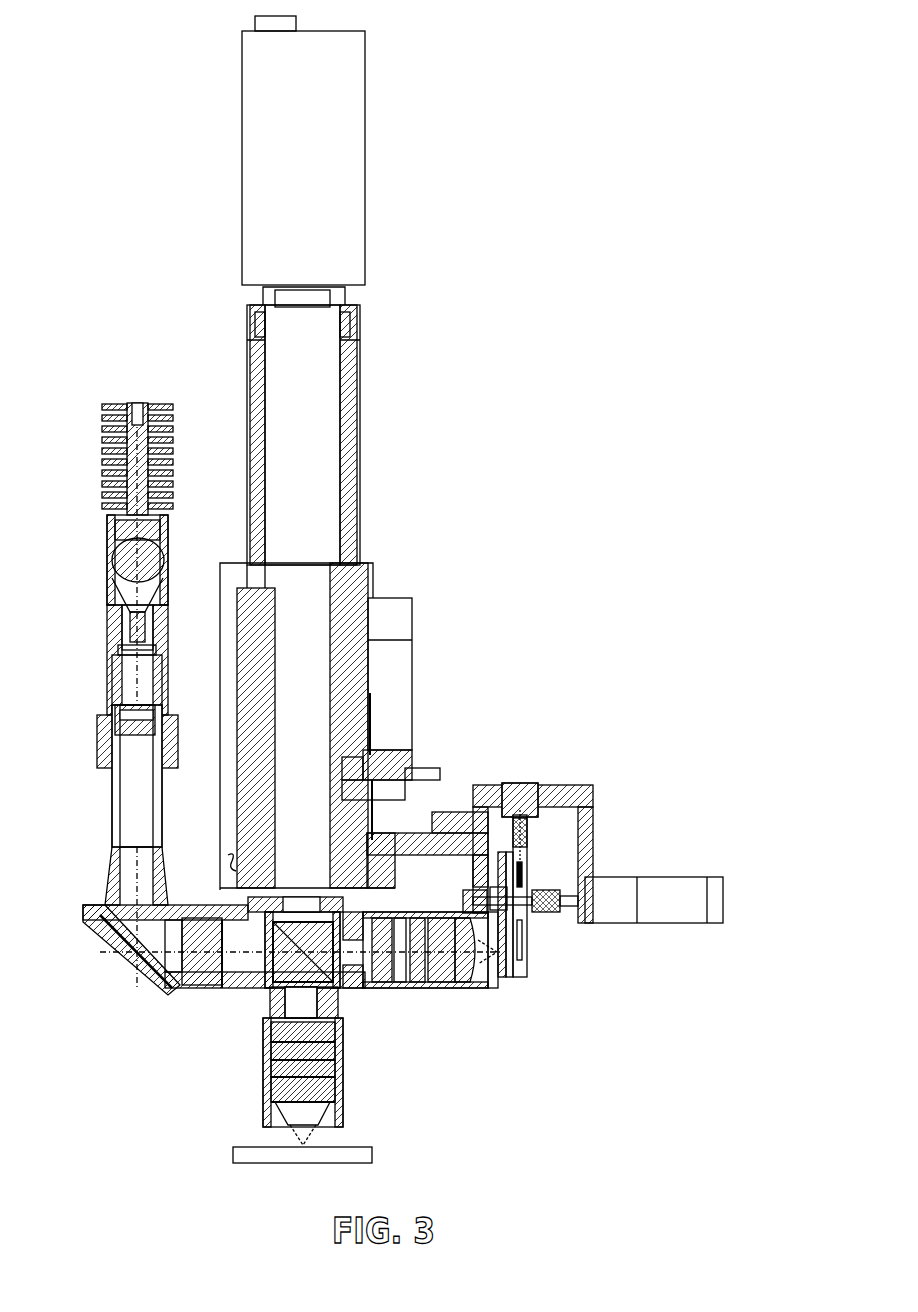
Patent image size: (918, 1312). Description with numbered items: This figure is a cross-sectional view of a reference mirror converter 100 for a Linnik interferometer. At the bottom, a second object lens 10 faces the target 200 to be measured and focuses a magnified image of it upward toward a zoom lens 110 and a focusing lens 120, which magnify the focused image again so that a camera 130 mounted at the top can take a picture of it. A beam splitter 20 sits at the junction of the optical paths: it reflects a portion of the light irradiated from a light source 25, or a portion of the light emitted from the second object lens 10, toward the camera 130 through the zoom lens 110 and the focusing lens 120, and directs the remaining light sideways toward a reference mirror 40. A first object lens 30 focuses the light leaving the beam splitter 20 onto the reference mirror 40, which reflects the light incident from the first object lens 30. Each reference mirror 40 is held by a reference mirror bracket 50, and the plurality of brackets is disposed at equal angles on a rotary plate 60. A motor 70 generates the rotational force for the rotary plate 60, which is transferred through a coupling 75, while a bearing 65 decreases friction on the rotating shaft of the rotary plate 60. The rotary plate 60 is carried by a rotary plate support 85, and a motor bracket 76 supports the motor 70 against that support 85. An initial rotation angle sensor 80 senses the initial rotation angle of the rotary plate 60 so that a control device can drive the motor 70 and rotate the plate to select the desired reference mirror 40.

The reference mirror converter 100 is at (580, 122).
The camera 130 is at (350, 190).
The focusing lens 120 is at (358, 462).
The zoom lens 110 is at (368, 622).
The light source 25 is at (110, 577).
The rotary plate support 85 is at (455, 812).
The initial rotation angle sensor 80 is at (517, 790).
The motor bracket 76 is at (573, 788).
The rotary plate 60 is at (530, 837).
The bearing 65 is at (508, 895).
The motor 70 is at (695, 877).
The coupling 75 is at (550, 913).
The reference mirror bracket 50 is at (528, 960).
The reference mirror 40 is at (497, 960).
The first object lens 30 is at (418, 990).
The beam splitter 20 is at (280, 988).
The second object lens 10 is at (265, 1075).
The target 200 is at (372, 1155).